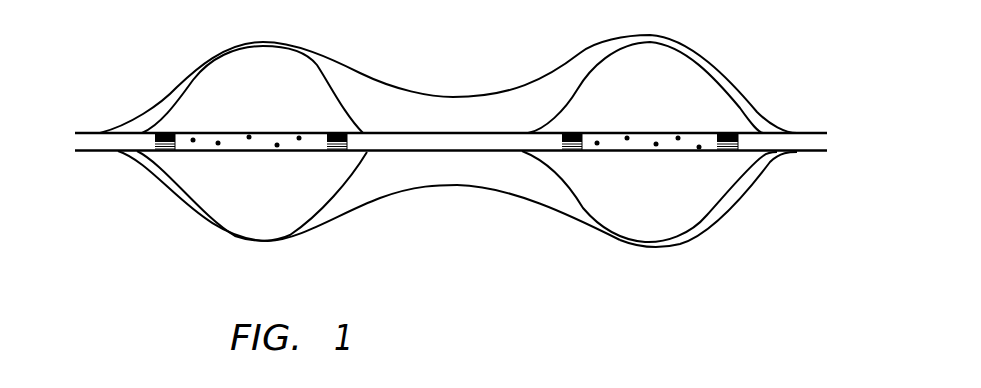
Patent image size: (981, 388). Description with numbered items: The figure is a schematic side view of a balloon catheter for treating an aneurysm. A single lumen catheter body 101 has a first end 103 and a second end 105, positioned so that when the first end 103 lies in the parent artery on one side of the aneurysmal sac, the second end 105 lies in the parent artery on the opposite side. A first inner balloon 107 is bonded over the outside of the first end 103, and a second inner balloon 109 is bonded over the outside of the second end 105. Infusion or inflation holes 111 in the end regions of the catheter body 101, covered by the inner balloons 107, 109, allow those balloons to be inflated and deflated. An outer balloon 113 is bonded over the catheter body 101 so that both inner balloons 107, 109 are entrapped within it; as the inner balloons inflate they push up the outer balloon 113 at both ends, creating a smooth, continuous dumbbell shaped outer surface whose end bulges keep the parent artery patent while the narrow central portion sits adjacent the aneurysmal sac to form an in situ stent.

The single lumen catheter body 101 is at (460, 151).
The first end 103 is at (190, 151).
The second end 105 is at (700, 133).
The first inner balloon 107 is at (253, 203).
The second inner balloon 109 is at (667, 202).
The infusion or inflation holes 111 is at (218, 140).
The outer balloon 113 is at (440, 187).